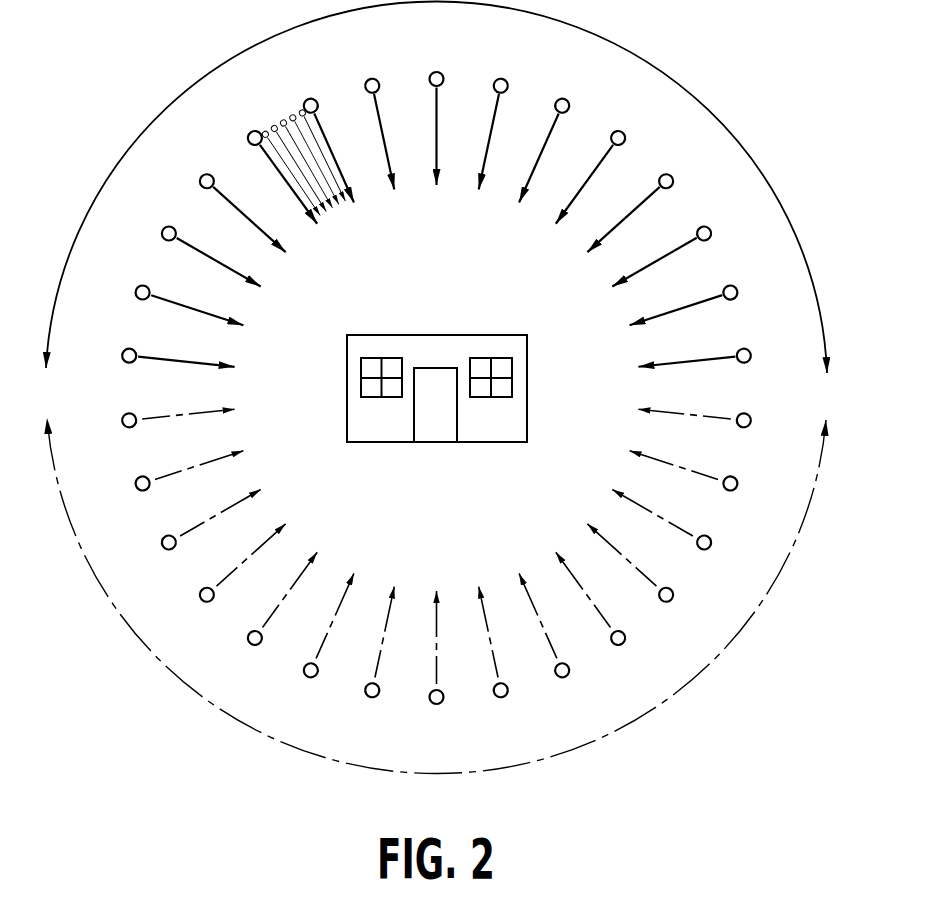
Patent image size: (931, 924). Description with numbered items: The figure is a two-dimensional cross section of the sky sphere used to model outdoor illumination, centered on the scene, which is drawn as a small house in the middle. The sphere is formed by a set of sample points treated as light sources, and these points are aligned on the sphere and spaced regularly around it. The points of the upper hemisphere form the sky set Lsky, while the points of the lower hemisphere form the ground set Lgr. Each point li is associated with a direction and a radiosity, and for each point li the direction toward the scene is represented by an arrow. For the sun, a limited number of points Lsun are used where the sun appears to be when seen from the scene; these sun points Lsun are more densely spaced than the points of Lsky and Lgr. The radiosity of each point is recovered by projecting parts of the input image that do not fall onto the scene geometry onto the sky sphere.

The sky sample points Lsky is at (436, 187).
The ground sample points Lgr is at (434, 596).
The sun sample points Lsun is at (300, 81).
The sample point Ii is at (114, 353).